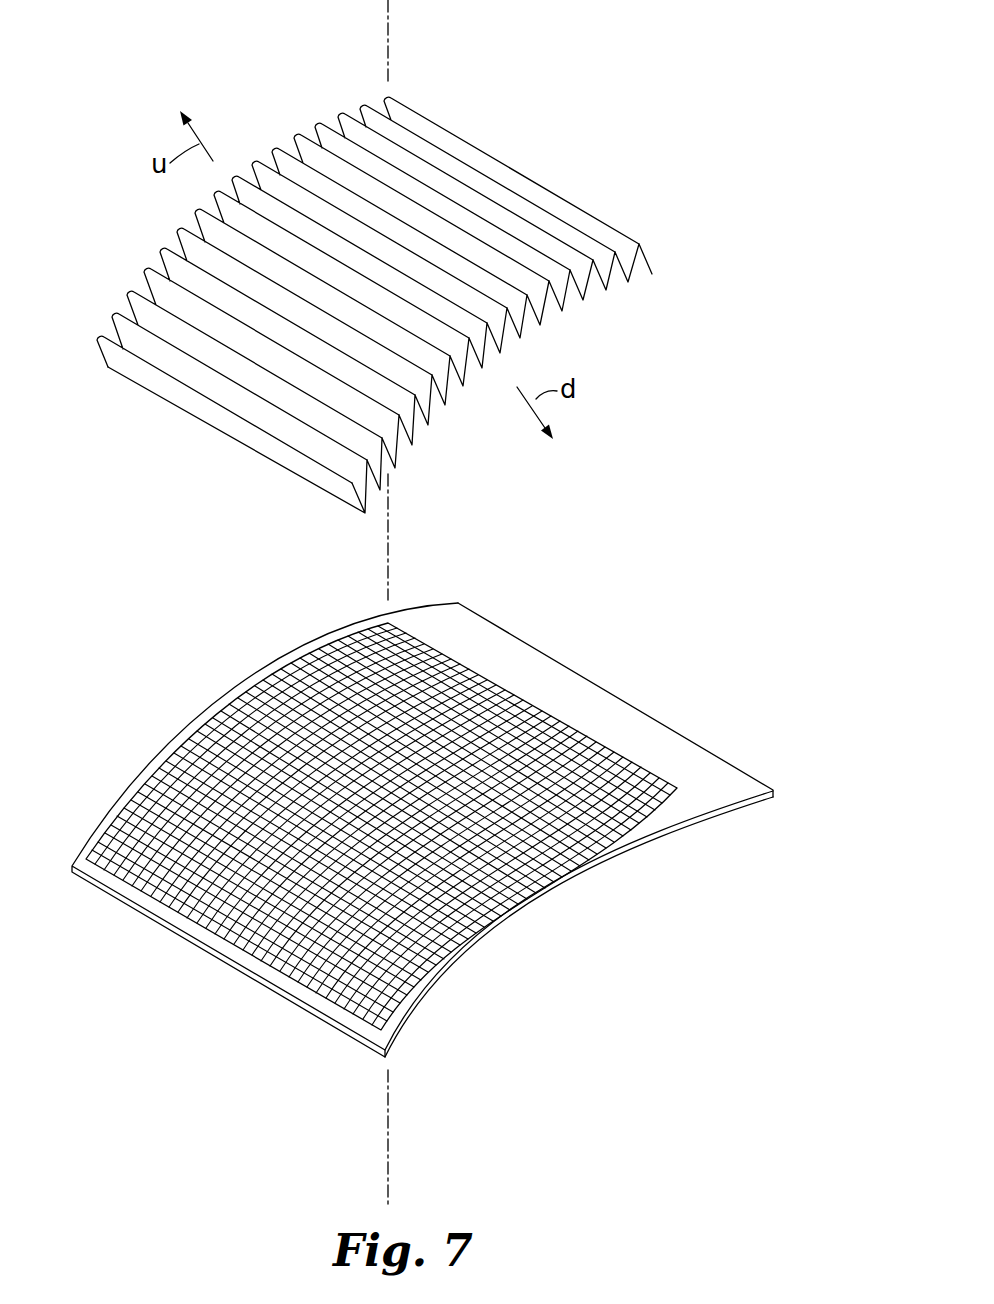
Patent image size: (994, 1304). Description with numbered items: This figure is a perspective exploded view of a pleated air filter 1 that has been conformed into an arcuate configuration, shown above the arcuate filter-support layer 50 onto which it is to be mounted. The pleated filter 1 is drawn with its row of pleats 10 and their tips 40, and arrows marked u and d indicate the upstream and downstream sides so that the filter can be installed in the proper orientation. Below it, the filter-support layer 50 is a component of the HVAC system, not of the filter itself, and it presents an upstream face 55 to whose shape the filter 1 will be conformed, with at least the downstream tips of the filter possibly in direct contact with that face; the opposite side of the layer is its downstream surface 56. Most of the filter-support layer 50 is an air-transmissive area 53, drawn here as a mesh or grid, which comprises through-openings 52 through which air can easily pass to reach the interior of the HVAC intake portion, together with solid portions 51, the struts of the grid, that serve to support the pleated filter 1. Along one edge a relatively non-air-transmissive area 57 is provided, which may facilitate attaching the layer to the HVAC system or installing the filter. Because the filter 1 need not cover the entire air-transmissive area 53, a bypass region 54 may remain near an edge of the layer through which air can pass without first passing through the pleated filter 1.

The pleated air filter 1 is at (239, 62).
The pleated filter medium 10 is at (611, 204).
The pleat edges 40 is at (464, 372).
The filter-support layer 50 is at (684, 672).
The solid portions 51 is at (235, 922).
The through-openings 52 is at (337, 987).
The air-transmissive area 53 is at (336, 770).
The bypass region 54 is at (167, 782).
The upstream face 55 is at (153, 697).
The downstream surface 56 is at (517, 898).
The non-air-transmissive area 57 is at (585, 694).